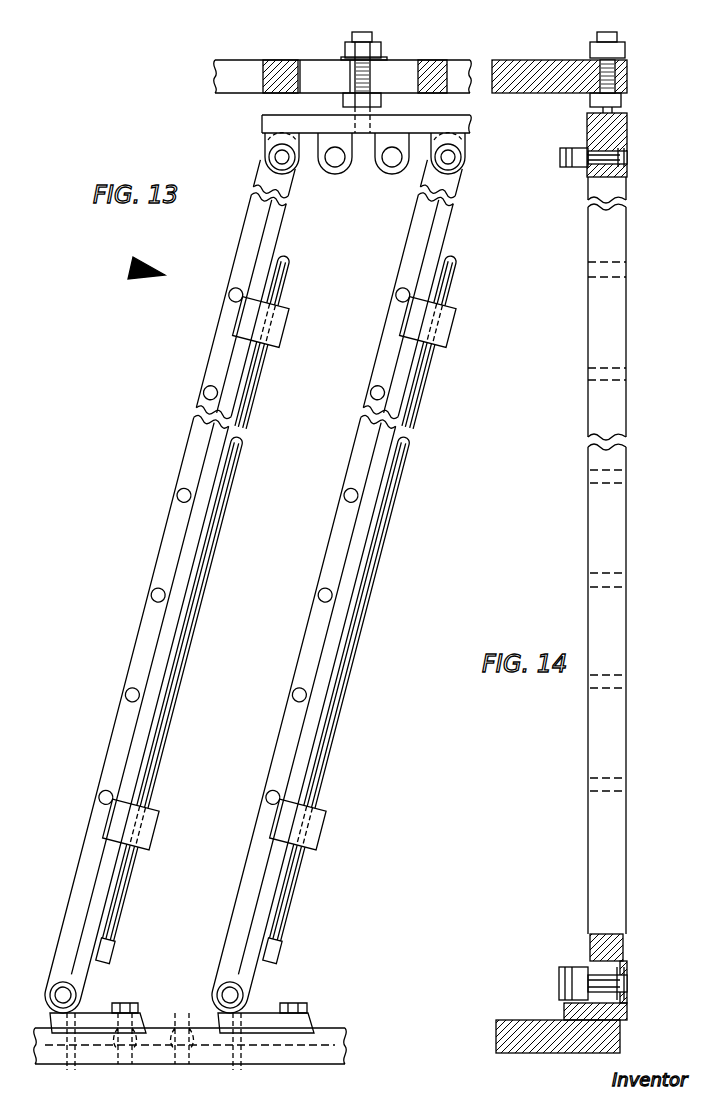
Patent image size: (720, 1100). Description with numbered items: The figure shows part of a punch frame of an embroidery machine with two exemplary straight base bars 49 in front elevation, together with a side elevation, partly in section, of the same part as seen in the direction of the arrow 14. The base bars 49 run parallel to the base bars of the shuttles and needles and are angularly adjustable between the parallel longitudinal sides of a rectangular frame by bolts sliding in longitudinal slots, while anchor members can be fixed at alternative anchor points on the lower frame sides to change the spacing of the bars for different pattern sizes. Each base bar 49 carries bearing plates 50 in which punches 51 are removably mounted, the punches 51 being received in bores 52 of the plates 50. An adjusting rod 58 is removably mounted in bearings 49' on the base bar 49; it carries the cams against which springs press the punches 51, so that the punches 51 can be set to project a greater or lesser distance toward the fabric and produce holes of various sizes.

In FIG. 13, the arrow 14 is at (135, 266).
In FIG. 13, the base bar 49 is at (254, 700).
In FIG. 14, the base bar 49 is at (581, 313).
In FIG. 13, the bearing 49' is at (296, 573).
In FIG. 13, the bearing plate 50 is at (106, 756).
In FIG. 14, the bearing plate 50 is at (592, 524).
In FIG. 13, the punch 51 is at (134, 690).
In FIG. 14, the bore 52 is at (592, 272).
In FIG. 13, the adjusting rod 58 is at (218, 553).